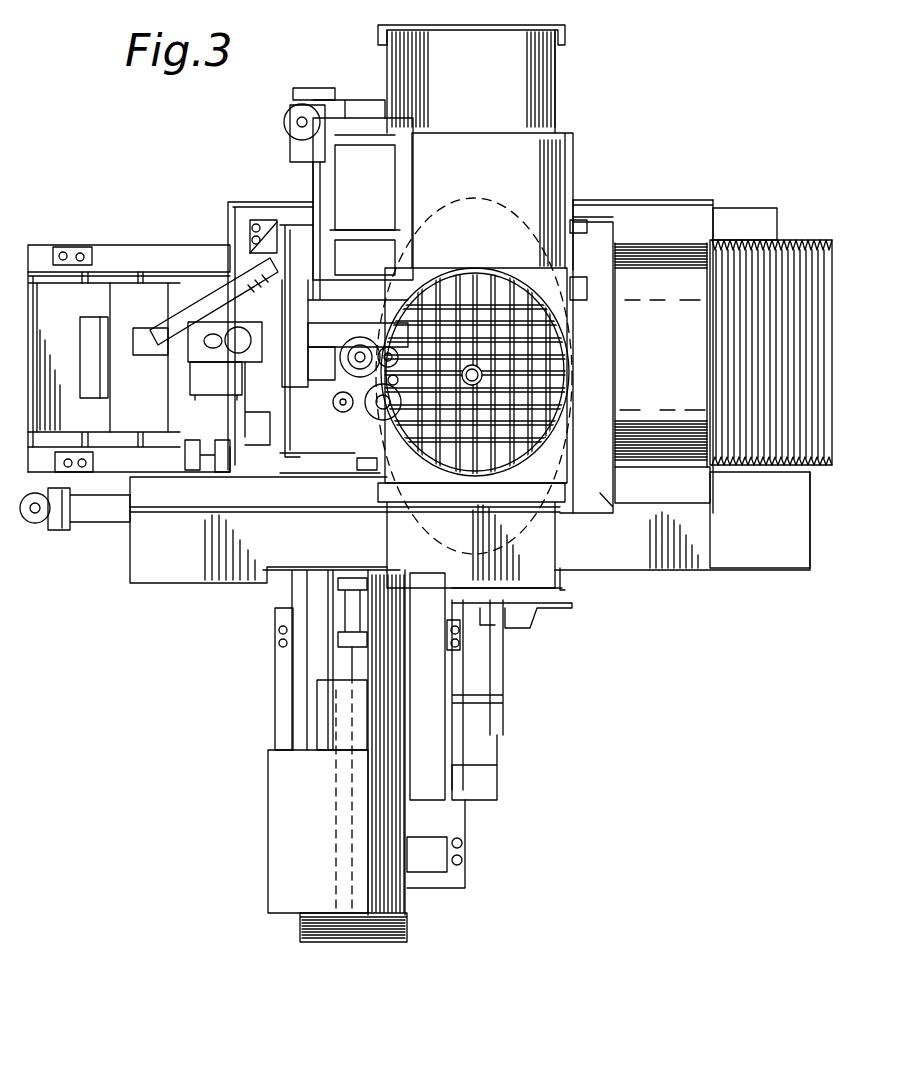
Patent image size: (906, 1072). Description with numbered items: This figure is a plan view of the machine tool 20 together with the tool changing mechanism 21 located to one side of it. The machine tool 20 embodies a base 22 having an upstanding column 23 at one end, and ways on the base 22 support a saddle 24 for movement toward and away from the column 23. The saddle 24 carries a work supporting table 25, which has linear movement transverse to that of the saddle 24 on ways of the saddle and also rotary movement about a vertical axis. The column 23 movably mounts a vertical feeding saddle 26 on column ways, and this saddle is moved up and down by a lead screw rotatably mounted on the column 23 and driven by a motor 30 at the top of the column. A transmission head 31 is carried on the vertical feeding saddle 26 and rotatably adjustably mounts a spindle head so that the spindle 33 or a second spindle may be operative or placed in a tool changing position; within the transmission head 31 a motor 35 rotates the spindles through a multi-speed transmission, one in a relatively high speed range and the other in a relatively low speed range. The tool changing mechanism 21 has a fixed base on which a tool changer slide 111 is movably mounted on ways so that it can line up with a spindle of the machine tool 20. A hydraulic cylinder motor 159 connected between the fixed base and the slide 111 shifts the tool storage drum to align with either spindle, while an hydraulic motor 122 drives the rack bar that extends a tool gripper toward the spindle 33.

The machine tool 20 is at (613, 177).
The tool changing mechanism 21 is at (517, 768).
The base 22 is at (747, 215).
The column 23 is at (152, 418).
The saddle 24 is at (603, 243).
The work supporting table 25 is at (513, 315).
The vertical feeding saddle 26 is at (277, 405).
The motor 30 is at (238, 343).
The transmission head 31 is at (397, 295).
The spindle 33 is at (360, 357).
The motor 35 is at (382, 204).
The tool changer slide 111 is at (285, 852).
The hydraulic motor 122 is at (513, 645).
The hydraulic cylinder motor 159 is at (338, 800).